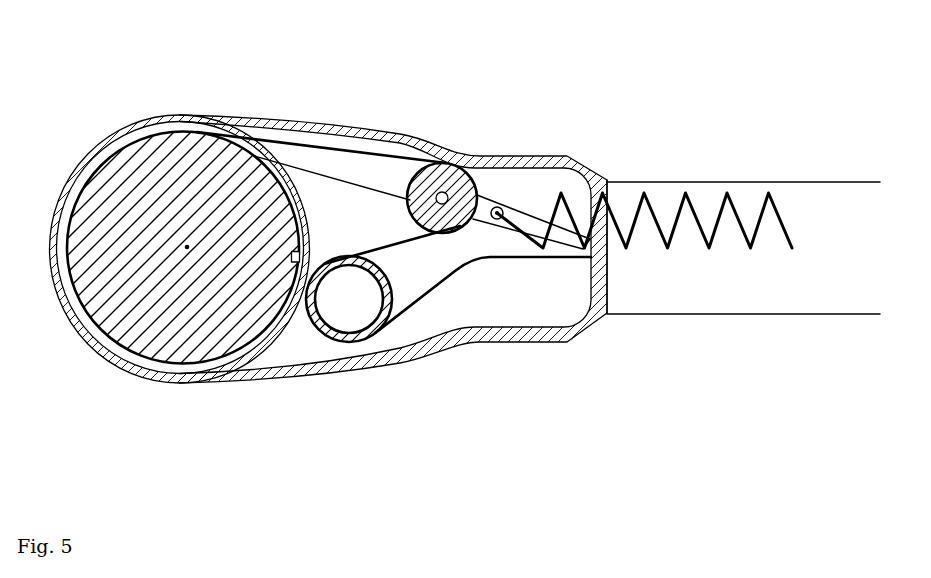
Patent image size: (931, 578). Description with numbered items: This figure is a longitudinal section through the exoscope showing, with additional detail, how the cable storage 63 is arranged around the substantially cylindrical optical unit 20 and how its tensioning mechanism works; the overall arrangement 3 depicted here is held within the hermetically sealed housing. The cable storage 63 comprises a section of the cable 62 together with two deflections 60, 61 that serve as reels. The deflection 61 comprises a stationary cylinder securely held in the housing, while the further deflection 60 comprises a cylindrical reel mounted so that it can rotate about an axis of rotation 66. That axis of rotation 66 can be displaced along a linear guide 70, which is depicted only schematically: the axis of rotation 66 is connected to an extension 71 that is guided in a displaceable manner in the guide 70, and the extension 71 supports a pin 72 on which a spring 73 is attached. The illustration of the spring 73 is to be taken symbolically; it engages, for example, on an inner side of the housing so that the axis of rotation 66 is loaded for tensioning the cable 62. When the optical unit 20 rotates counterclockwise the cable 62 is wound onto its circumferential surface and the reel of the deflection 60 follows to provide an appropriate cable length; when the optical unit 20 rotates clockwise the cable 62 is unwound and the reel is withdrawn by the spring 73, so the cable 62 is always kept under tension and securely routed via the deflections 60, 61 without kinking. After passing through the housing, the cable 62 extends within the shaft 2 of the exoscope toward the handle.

The drive assembly 3 is at (104, 97).
The optical unit 20 is at (125, 322).
The linear guide 70 is at (382, 180).
The axis of rotation 66 is at (443, 190).
The extension 71 is at (492, 206).
The pin 72 is at (500, 205).
The spring 73 is at (647, 195).
The deflection 61 is at (382, 346).
The cable storage 63 is at (413, 260).
The deflection 60 is at (458, 243).
The cable 62 is at (608, 316).
The shaft 2 is at (710, 315).